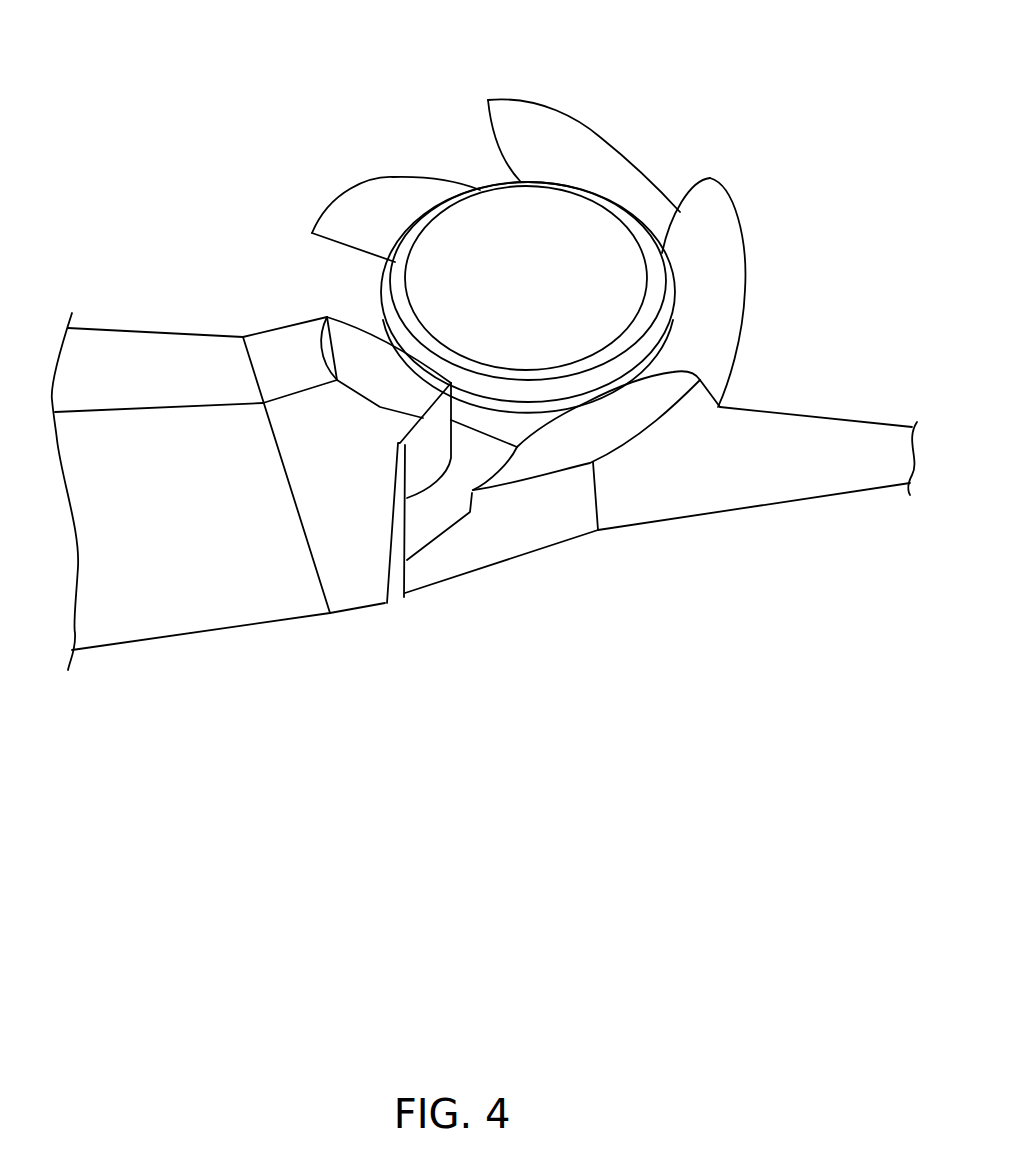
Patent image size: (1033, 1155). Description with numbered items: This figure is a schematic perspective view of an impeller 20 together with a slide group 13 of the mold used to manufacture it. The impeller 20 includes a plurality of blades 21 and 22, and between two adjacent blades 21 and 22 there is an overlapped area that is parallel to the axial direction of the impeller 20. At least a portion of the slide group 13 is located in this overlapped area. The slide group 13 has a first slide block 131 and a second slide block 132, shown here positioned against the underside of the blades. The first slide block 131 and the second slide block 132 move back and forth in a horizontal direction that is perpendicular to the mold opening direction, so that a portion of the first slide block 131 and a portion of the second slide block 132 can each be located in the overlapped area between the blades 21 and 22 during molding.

The slide group 13 is at (140, 305).
The first slide block 131 is at (890, 440).
The second slide block 132 is at (202, 360).
The impeller 20 is at (457, 124).
The blade 21 is at (357, 343).
The blade 22 is at (660, 385).